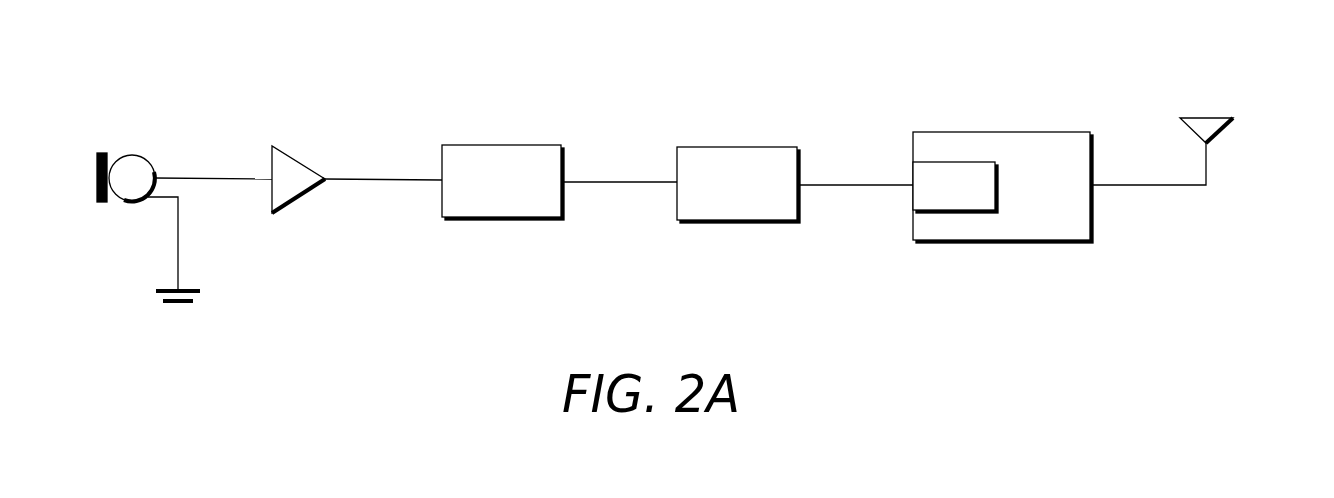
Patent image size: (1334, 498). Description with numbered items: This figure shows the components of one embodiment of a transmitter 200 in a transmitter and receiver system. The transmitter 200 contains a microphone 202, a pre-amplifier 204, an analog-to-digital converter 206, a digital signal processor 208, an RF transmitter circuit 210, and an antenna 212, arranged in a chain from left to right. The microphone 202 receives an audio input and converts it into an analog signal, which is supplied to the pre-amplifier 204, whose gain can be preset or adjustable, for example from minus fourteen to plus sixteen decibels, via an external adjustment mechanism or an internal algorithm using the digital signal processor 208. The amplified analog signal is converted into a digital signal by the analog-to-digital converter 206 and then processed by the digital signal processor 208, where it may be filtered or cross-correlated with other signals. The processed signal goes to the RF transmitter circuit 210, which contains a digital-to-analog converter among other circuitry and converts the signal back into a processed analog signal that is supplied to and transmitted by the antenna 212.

The transmitter 200 is at (1332, 82).
The microphone 202 is at (132, 155).
The pre-amplifier 204 is at (300, 163).
The analog-to-digital converter 206 is at (460, 145).
The digital signal processor 208 is at (695, 147).
The RF transmitter circuit 210 is at (932, 132).
The antenna 212 is at (1197, 117).